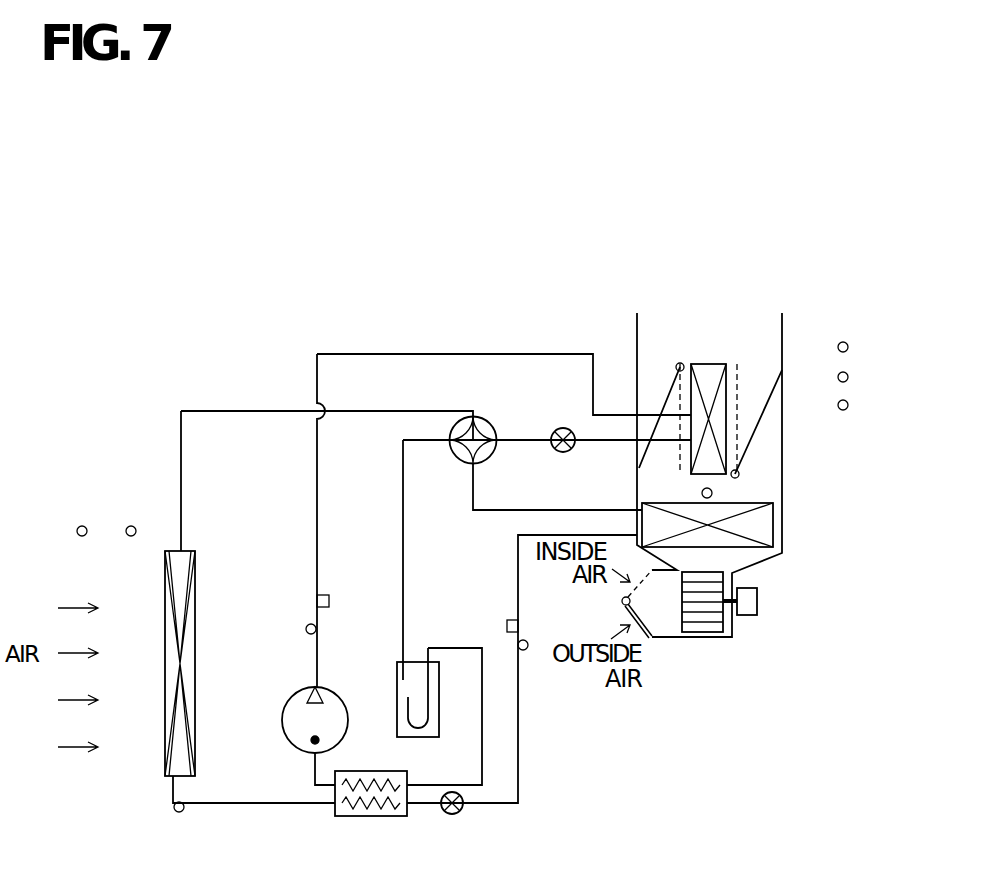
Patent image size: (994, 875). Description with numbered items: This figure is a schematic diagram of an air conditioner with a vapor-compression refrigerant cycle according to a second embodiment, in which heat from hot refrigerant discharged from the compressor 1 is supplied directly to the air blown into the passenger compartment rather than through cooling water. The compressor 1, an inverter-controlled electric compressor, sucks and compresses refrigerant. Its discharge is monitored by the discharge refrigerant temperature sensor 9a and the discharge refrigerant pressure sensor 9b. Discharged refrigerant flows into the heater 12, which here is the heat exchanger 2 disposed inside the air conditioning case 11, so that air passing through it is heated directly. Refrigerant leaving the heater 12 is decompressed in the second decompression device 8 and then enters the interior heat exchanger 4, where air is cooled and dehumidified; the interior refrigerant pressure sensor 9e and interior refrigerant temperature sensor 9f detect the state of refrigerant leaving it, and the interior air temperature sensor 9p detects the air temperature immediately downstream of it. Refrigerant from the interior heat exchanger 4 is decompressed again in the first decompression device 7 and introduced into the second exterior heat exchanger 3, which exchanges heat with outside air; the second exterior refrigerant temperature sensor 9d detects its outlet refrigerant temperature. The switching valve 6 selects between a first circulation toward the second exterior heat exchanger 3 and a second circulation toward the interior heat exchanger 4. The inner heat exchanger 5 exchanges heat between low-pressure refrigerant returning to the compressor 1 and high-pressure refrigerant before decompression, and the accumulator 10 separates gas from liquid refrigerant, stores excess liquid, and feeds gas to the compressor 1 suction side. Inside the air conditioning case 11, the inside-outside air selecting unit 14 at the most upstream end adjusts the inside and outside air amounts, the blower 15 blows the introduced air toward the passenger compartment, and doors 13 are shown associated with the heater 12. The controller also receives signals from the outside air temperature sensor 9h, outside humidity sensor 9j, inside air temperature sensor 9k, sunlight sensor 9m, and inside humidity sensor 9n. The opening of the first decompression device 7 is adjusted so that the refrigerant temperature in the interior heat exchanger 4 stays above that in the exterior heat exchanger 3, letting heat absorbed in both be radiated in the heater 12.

The compressor 1 is at (340, 698).
The first exterior heat exchanger 2 is at (715, 436).
The heater 12 is at (781, 419).
The second exterior heat exchanger 3 is at (165, 612).
The interior heat exchanger 4 is at (762, 532).
The inner heat exchanger 5 is at (378, 817).
The switching valve 6 is at (487, 458).
The first decompression device 7 is at (452, 815).
The second decompression device 8 is at (555, 431).
The discharge refrigerant temperature sensor 9a is at (307, 624).
The discharge refrigerant pressure sensor 9b is at (325, 594).
The second exterior refrigerant temperature sensor 9d is at (184, 811).
The interior refrigerant pressure sensor 9e is at (508, 619).
The interior refrigerant temperature sensor 9f is at (524, 651).
The outside air temperature sensor 9h is at (131, 526).
The outside humidity sensor 9j is at (82, 526).
The inside air temperature sensor 9k is at (838, 347).
The sunlight sensor 9m is at (845, 372).
The inside humidity sensor 9n is at (838, 405).
The interior air temperature sensor 9p is at (712, 493).
The accumulator 10 is at (439, 701).
The air conditioning case 11 is at (782, 470).
The air mix door 13 is at (648, 442).
The inside-outside air selecting unit 14 is at (622, 601).
The blower 15 is at (745, 615).